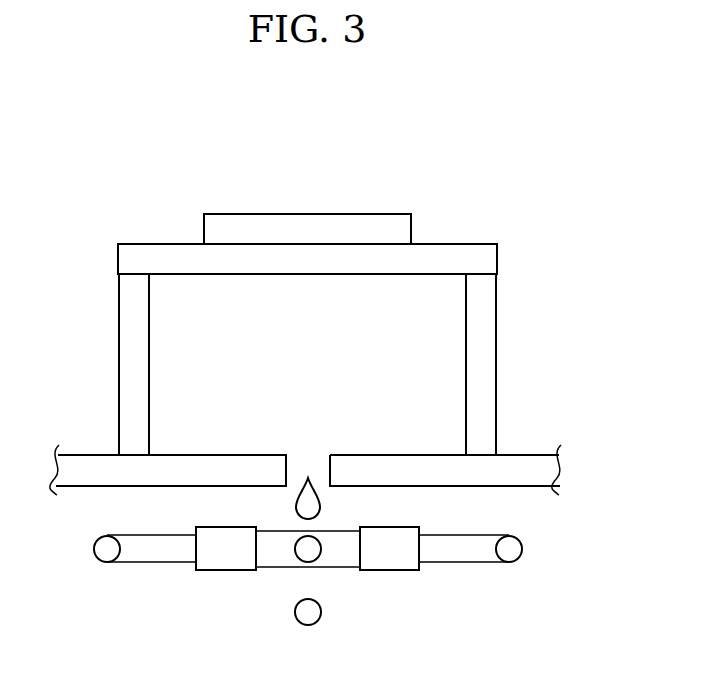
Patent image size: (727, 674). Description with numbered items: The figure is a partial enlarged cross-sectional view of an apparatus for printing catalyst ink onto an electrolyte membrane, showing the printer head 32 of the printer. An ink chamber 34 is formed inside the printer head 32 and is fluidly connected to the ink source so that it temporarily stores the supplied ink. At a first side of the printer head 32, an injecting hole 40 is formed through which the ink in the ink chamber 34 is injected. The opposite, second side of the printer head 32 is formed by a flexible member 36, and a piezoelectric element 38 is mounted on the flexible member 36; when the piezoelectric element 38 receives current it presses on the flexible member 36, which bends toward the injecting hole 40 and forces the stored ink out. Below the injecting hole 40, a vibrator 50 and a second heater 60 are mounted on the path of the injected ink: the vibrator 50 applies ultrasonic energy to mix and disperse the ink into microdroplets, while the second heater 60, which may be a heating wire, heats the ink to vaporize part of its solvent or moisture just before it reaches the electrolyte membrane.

The printer head 32 is at (515, 256).
The ink chamber 34 is at (433, 367).
The flexible member 36 is at (437, 256).
The piezoelectric element 38 is at (307, 223).
The injecting hole 40 is at (305, 463).
The vibrator 50 is at (389, 559).
The second heater 60 is at (513, 547).